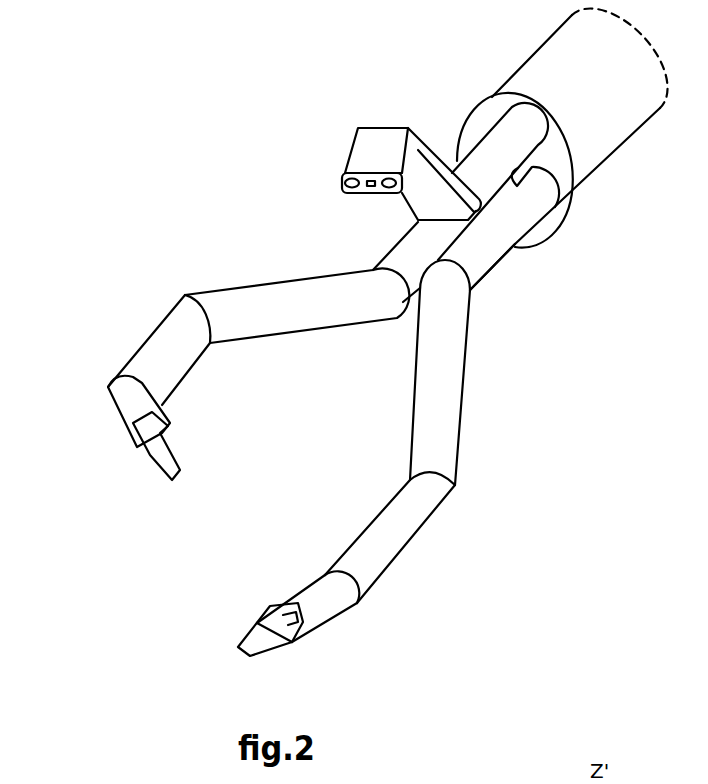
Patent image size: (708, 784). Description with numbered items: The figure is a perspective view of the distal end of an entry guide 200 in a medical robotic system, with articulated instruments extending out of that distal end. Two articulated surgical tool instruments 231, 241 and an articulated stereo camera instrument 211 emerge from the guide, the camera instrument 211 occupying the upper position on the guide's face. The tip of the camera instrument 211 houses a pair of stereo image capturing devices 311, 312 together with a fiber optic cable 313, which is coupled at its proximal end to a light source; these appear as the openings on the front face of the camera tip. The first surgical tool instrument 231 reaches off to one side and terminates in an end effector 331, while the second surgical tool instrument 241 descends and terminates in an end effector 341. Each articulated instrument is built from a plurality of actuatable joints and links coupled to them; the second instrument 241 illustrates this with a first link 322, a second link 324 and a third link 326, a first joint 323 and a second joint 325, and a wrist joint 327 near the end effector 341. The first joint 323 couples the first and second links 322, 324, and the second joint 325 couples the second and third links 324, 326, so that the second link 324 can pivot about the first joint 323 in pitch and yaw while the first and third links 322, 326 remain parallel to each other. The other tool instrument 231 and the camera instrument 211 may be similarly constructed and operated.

The entry guide 200 is at (608, 155).
The articulated stereo camera instrument 211 is at (394, 117).
The stereo image capturing device 311 is at (341, 185).
The stereo image capturing device 312 is at (387, 190).
The fiber optic cable 313 is at (368, 189).
The articulated surgical tool instrument 231 is at (252, 273).
The end effector 331 is at (106, 433).
The first link 322 is at (504, 251).
The first joint 323 is at (453, 292).
The second link 324 is at (448, 395).
The second joint 325 is at (440, 486).
The third link 326 is at (390, 518).
The wrist joint 327 is at (341, 585).
The articulated surgical tool instrument 241 is at (408, 583).
The end effector 341 is at (255, 619).